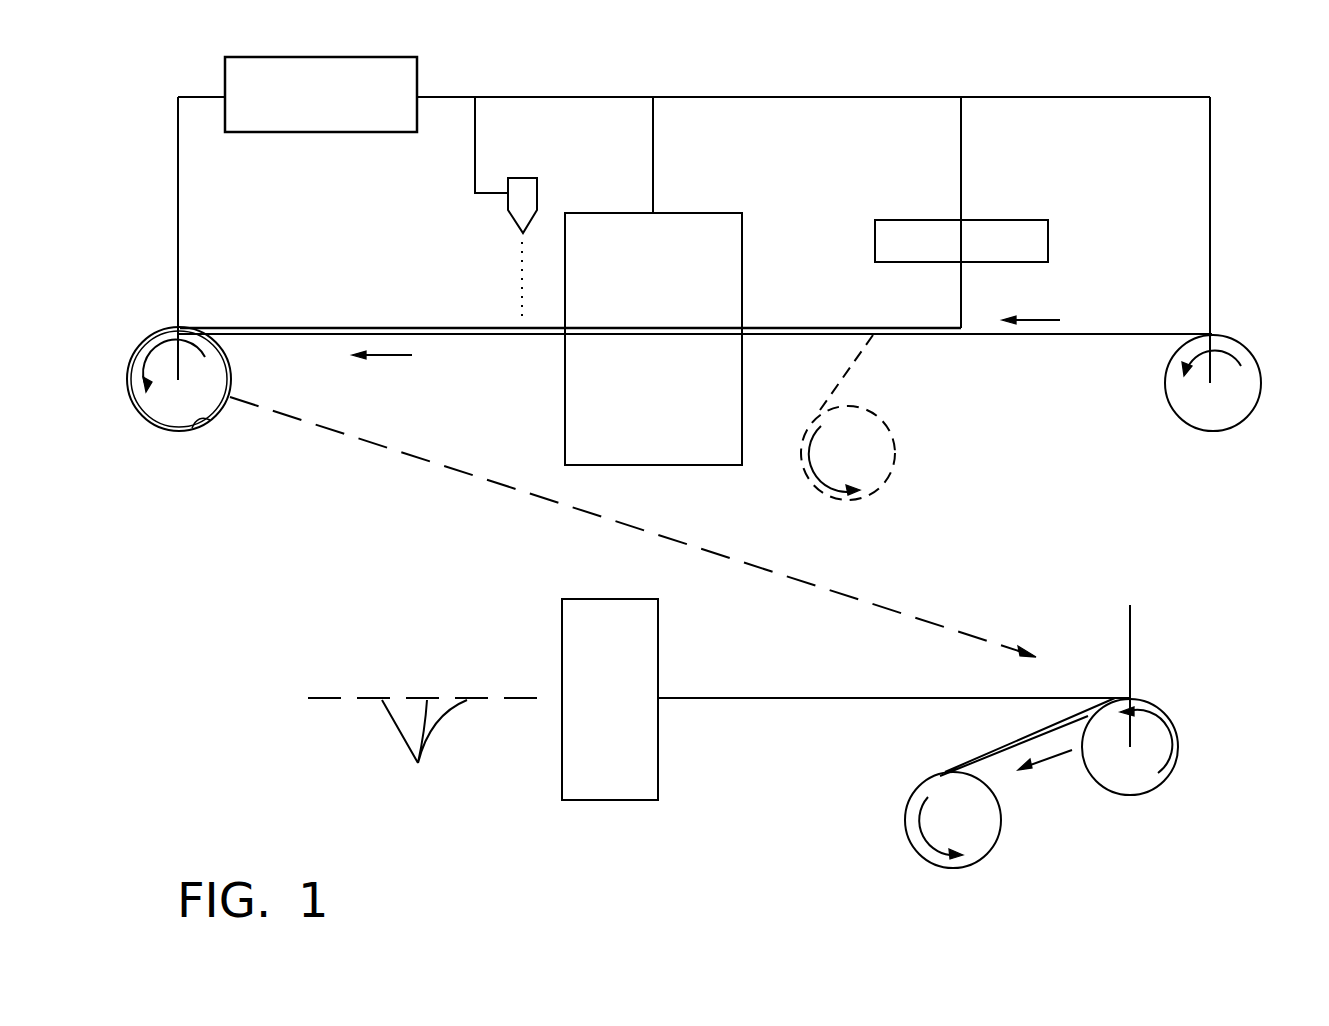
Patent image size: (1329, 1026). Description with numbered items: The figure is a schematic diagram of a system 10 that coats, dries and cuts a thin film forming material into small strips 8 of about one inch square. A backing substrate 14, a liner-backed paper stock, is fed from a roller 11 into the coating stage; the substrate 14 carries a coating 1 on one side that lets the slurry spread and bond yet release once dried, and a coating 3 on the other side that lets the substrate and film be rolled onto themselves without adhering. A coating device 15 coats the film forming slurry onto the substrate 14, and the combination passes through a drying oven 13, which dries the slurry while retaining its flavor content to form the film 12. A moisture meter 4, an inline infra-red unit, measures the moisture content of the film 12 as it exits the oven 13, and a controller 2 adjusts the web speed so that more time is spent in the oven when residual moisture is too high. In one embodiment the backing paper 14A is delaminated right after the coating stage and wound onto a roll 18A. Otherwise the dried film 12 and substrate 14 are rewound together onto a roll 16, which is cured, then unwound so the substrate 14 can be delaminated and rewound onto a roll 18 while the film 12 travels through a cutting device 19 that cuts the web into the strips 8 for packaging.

The coating 1 is at (1097, 333).
The controller 2 is at (245, 57).
The coating 3 is at (1132, 337).
The moisture meter 4 is at (527, 180).
The strips 8 is at (425, 748).
The system 10 is at (890, 81).
The roller 11 is at (1247, 348).
The film 12 is at (390, 328).
The drying oven 13 is at (715, 213).
The substrate 14 is at (192, 428).
The backing paper 14A is at (843, 378).
The coating device 15 is at (1048, 236).
The roll 16 is at (213, 372).
The roll 18 is at (997, 842).
The roll 18A is at (893, 452).
The cutting device 19 is at (658, 632).